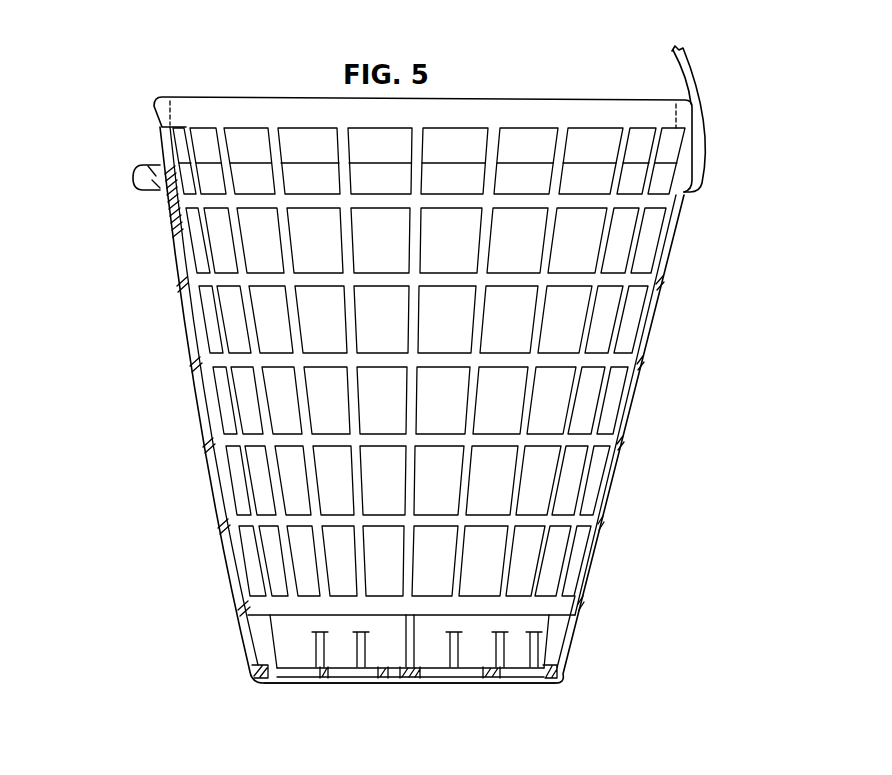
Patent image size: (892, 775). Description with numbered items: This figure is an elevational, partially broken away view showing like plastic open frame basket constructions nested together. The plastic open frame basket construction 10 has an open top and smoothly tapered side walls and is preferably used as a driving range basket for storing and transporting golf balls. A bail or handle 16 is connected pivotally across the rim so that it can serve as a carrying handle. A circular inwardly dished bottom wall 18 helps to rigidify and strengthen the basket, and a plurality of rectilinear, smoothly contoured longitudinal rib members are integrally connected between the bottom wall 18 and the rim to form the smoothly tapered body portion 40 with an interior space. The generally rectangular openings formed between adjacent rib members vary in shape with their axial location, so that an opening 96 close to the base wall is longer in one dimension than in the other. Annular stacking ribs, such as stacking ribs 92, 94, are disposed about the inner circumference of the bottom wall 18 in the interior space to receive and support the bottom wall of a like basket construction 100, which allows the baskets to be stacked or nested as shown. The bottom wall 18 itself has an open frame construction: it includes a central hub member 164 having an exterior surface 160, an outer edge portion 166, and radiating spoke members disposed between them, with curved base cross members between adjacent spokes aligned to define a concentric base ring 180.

The plastic open frame basket construction 10 is at (135, 360).
The bail or handle 16 is at (702, 92).
The bottom wall 18 is at (565, 690).
The body portion 40 is at (660, 377).
The stacking rib 92 is at (268, 648).
The stacking rib 94 is at (405, 642).
The opening 96 is at (552, 657).
The like basket construction 100 is at (153, 83).
The exterior surface 160 is at (437, 684).
The central hub member 164 is at (405, 676).
The outer edge portion 166 is at (258, 680).
The concentric base ring 180 is at (312, 661).